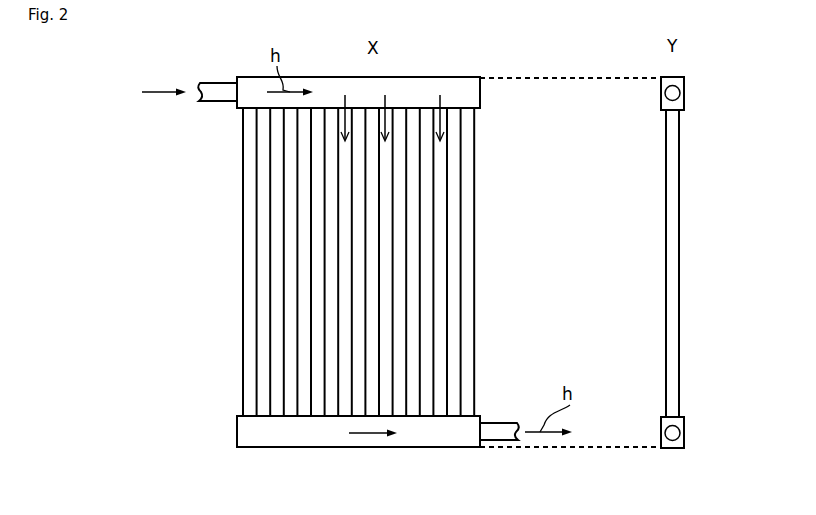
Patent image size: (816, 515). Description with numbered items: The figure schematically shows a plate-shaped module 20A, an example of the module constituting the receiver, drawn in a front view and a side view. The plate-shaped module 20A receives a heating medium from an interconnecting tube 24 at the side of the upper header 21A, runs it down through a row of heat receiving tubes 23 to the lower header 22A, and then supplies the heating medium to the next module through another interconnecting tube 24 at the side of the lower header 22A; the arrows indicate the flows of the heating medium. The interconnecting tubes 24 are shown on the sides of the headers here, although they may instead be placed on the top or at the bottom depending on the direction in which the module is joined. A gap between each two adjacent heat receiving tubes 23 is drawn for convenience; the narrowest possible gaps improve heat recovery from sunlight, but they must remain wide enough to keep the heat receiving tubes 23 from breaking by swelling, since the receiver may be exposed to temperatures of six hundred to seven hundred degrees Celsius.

The plate-shaped module 20A is at (118, 78).
The upper header 21A is at (465, 95).
The lower header 22A is at (300, 439).
The heat receiving tubes 23 is at (248, 240).
The interconnecting tube 24 is at (223, 87).